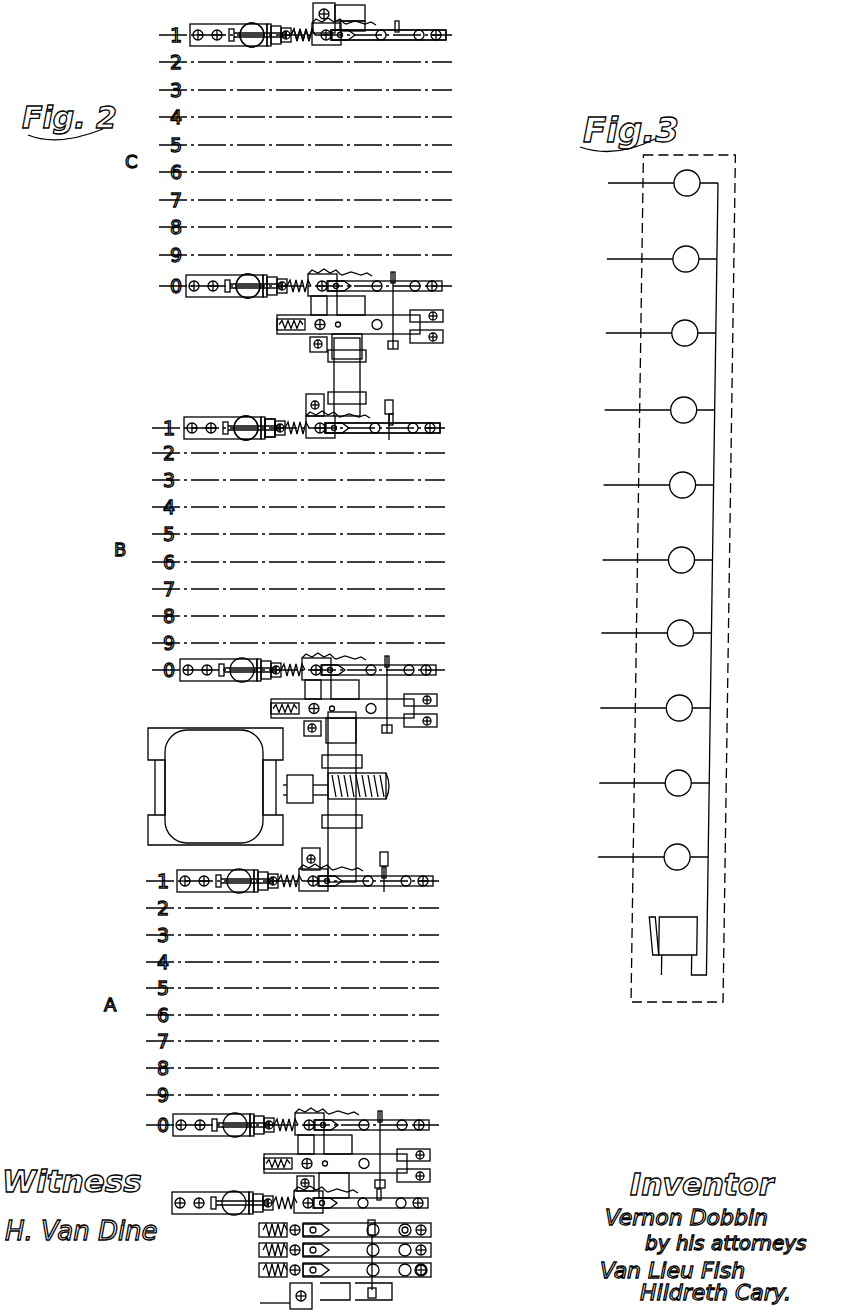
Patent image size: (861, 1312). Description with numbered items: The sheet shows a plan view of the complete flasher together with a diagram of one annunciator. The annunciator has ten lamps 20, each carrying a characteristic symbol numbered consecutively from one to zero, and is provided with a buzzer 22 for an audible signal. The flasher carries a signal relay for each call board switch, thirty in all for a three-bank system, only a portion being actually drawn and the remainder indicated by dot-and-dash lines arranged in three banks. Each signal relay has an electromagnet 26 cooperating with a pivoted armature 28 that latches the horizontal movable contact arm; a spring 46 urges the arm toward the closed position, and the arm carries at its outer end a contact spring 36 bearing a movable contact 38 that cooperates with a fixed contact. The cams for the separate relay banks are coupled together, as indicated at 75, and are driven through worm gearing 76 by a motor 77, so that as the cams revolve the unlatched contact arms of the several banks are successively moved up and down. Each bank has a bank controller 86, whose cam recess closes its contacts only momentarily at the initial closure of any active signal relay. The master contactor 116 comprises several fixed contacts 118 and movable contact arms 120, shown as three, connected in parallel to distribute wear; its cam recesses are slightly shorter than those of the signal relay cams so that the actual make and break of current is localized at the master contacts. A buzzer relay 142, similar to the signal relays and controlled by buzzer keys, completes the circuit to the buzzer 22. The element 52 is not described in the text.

In FIG. 2, the contact plunger ball 52 is at (252, 26).
In FIG. 2, the spring 46 is at (303, 30).
In FIG. 2, the movable contact 38 is at (413, 32).
In FIG. 2, the electromagnet 26 is at (247, 300).
In FIG. 2, the pivoted armature 28 is at (273, 418).
In FIG. 2, the contact spring 36 is at (402, 422).
In FIG. 2, the coupling of the cams 75 is at (358, 380).
In FIG. 2, the bank controller 86 is at (452, 329).
In FIG. 2, the motor 77 is at (160, 786).
In FIG. 2, the worm gearing 76 is at (380, 790).
In FIG. 2, the buzzer relay 142 is at (368, 1201).
In FIG. 2, the master contactor 116 is at (437, 1225).
In FIG. 2, the fixed contact 118 is at (427, 1230).
In FIG. 2, the movable contact arm 120 is at (408, 1236).
In FIG. 3, the lamp 20 is at (689, 246).
In FIG. 3, the buzzer 22 is at (670, 940).